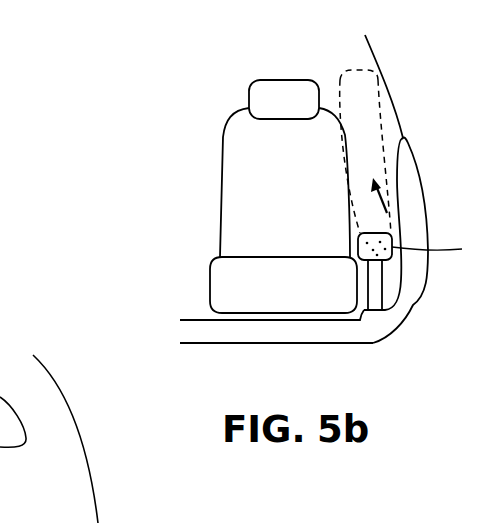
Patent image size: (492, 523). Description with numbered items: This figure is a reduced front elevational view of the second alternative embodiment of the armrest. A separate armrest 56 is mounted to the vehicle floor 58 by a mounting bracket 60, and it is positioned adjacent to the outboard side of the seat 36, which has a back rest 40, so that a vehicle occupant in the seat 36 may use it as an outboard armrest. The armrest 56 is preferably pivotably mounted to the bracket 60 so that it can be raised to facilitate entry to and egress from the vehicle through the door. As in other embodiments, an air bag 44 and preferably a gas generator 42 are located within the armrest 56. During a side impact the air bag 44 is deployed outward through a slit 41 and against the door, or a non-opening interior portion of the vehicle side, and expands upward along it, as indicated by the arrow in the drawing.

The seat 36 is at (245, 196).
The back rest 40 is at (297, 186).
The slit 41 is at (442, 249).
The gas generator 42 is at (358, 236).
The air bag 44 is at (350, 72).
The armrest 56 is at (346, 278).
The vehicle floor 58 is at (361, 318).
The mounting bracket 60 is at (382, 283).